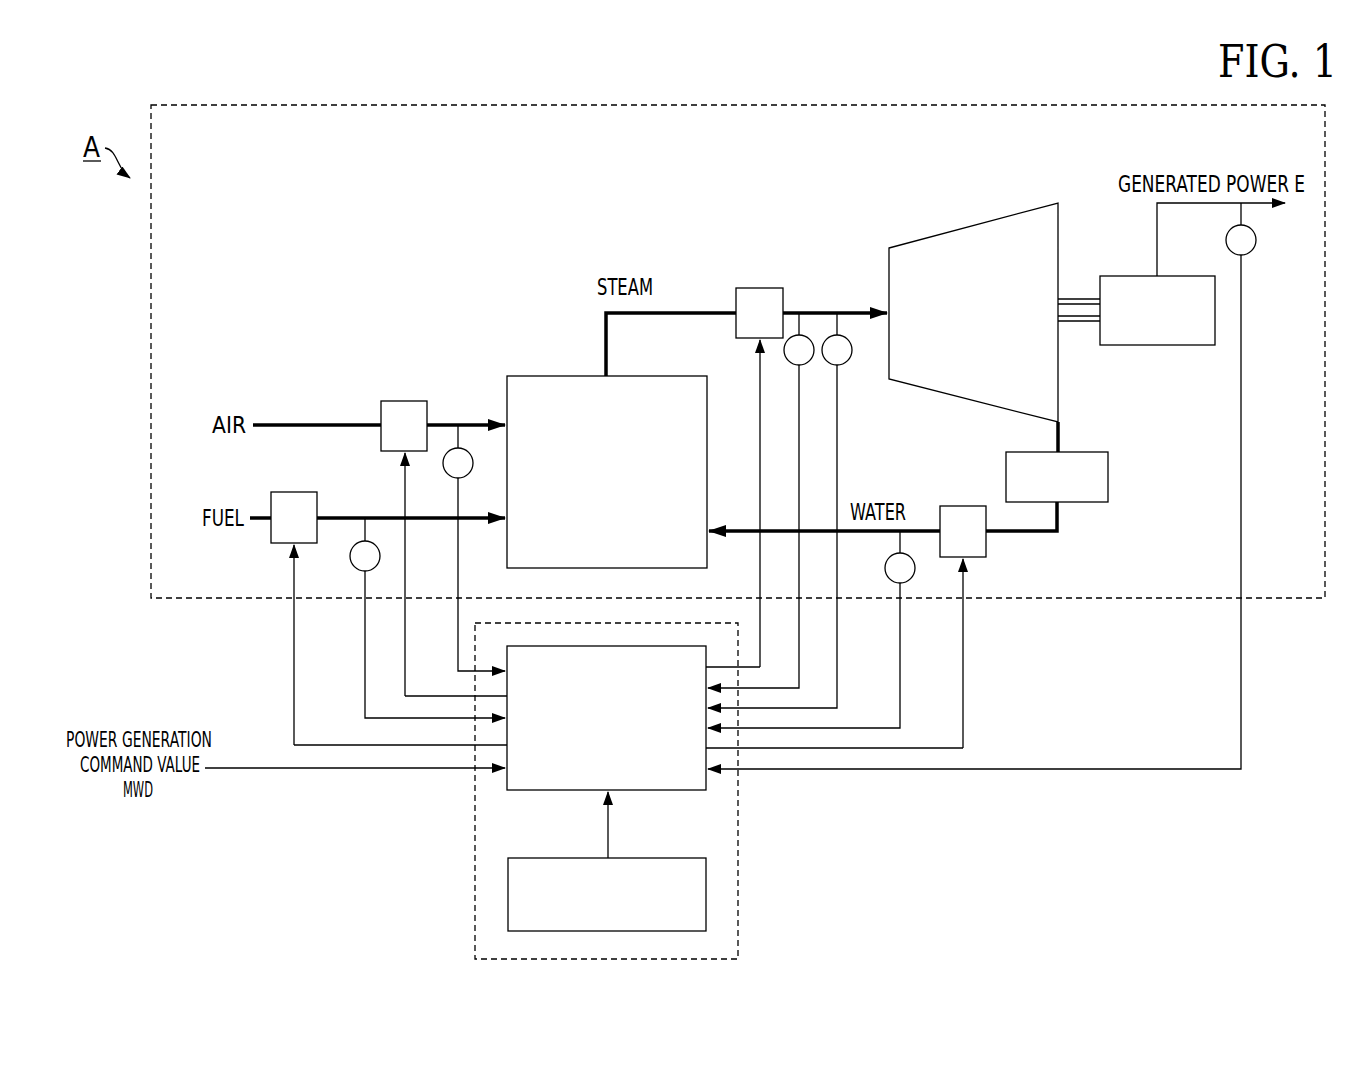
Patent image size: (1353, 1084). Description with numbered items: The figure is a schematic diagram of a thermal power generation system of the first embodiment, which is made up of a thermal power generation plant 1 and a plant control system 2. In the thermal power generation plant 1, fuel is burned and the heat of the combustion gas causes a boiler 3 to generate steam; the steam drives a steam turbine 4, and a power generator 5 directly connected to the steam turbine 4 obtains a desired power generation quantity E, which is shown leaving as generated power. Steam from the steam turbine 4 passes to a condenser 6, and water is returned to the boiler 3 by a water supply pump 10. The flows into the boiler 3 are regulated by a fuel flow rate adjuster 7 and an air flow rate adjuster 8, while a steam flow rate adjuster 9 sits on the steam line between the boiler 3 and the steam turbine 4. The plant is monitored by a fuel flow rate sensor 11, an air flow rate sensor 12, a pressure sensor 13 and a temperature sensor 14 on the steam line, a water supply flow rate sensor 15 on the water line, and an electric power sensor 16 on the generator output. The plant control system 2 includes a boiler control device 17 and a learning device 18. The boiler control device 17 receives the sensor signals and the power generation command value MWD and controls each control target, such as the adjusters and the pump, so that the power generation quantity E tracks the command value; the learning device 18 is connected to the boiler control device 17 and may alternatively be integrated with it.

The thermal power generation plant 1 is at (603, 105).
The plant control system 2 is at (740, 862).
The boiler 3 is at (530, 376).
The steam turbine 4 is at (967, 228).
The power generator 5 is at (1125, 276).
The condenser 6 is at (1110, 478).
The fuel flow rate adjuster 7 is at (295, 492).
The air flow rate adjuster 8 is at (407, 401).
The steam flow rate adjuster 9 is at (758, 288).
The water supply pump 10 is at (962, 506).
The fuel flow rate sensor 11 is at (353, 562).
The air flow rate sensor 12 is at (446, 470).
The pressure sensor 13 is at (791, 362).
The temperature sensor 14 is at (848, 362).
The water supply flow rate sensor 15 is at (887, 561).
The electric power sensor 16 is at (1254, 249).
The boiler control device 17 is at (562, 790).
The learning device 18 is at (660, 858).